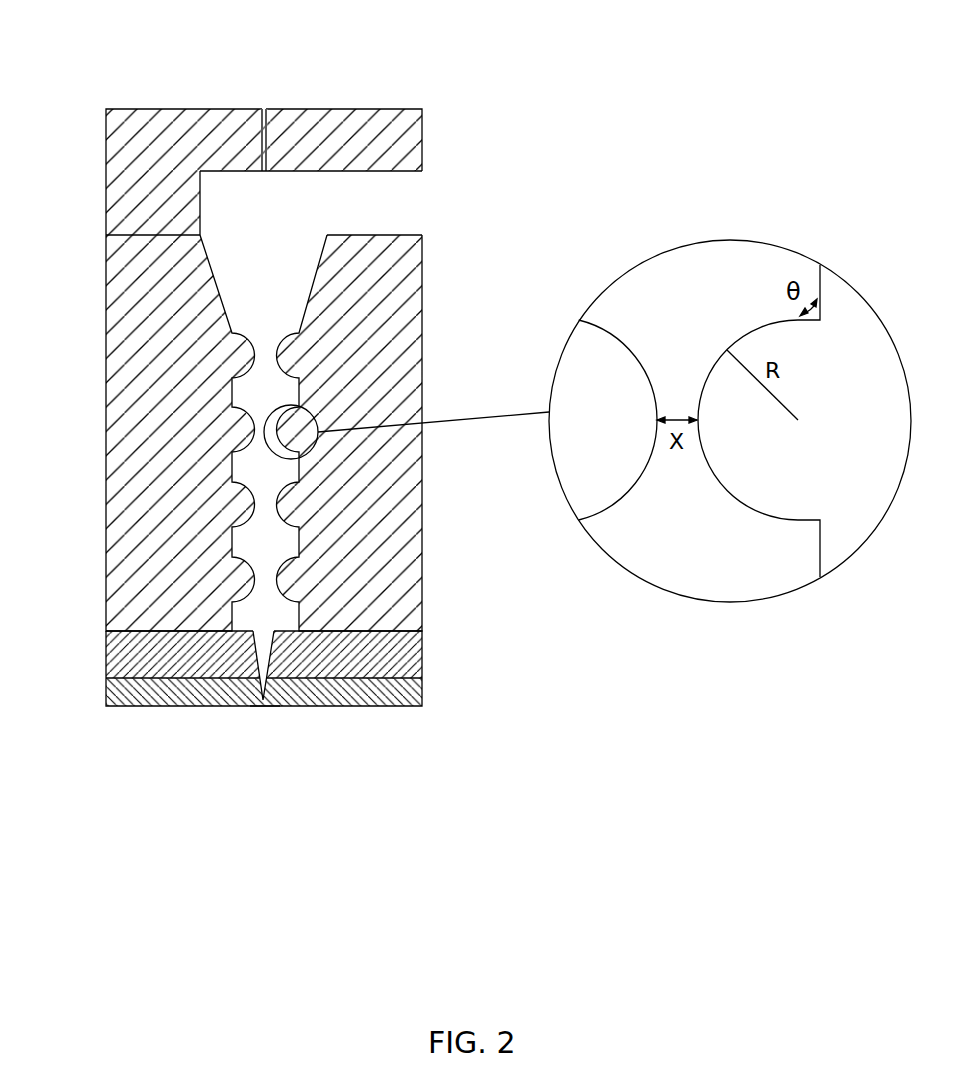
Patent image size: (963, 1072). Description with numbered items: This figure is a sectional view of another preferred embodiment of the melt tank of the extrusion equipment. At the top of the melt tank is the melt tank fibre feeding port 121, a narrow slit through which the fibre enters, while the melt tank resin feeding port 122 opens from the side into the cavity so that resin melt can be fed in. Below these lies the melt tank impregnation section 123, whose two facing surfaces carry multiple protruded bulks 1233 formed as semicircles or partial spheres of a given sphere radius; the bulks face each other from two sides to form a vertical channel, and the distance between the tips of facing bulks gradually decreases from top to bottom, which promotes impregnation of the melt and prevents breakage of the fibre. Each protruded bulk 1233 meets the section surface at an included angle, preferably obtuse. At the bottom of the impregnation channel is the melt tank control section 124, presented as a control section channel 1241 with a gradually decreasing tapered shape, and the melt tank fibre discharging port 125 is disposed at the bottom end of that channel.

The melt tank fibre feeding port 121 is at (264, 109).
The melt tank resin feeding port 122 is at (390, 200).
The melt tank impregnation section 123 is at (102, 344).
The protruded bulk 1233 is at (613, 360).
The melt tank control section 124 is at (104, 633).
The control section channel 1241 is at (260, 659).
The melt tank fibre discharging port 125 is at (263, 703).